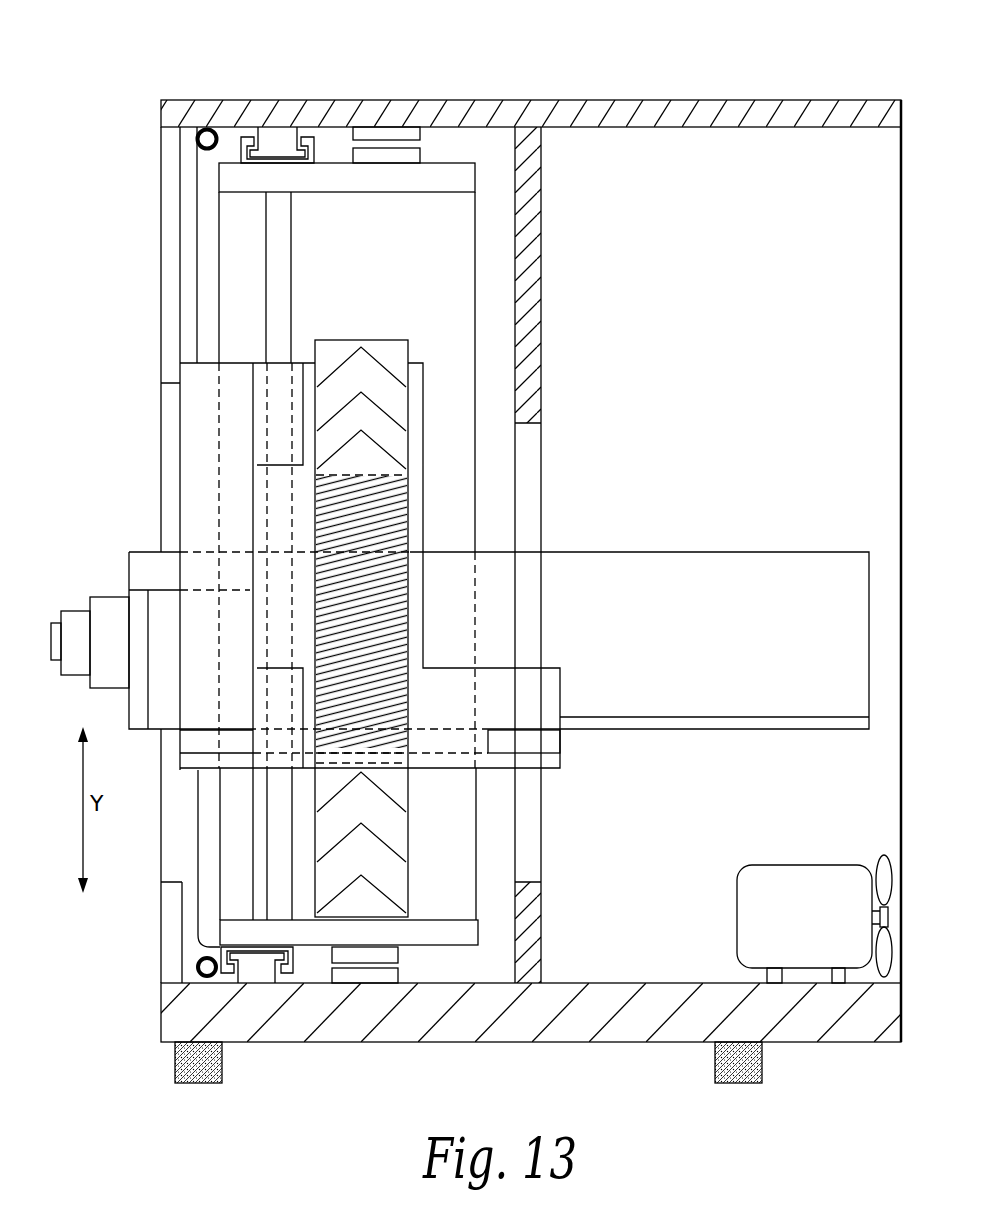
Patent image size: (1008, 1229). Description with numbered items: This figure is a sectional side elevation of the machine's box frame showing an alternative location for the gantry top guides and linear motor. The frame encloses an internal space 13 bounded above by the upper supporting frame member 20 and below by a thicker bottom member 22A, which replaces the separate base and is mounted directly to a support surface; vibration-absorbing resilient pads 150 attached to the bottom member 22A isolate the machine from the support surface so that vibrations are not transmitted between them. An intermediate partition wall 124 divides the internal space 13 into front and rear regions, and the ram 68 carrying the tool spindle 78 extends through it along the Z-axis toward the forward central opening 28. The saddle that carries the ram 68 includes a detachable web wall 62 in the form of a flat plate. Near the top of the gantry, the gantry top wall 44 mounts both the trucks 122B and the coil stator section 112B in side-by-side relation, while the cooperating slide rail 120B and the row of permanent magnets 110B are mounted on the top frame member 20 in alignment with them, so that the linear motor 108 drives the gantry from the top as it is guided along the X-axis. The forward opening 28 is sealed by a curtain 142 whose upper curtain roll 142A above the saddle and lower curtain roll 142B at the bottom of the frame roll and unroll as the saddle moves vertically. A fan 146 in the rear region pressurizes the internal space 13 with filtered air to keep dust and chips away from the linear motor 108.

The box frame internal space 13 is at (507, 426).
The upper supporting frame member 20 is at (340, 118).
The thicker bottom member 22A is at (451, 1025).
The forward central opening 28 is at (167, 388).
The gantry top wall 44 is at (465, 177).
The detachable web wall 62 is at (497, 762).
The ram 68 is at (644, 577).
The tool spindle 78 is at (63, 585).
The linear motor 108 is at (437, 434).
The row of permanent magnets 110B is at (390, 135).
The coil stator section 112B is at (408, 157).
The slide rail 120B is at (281, 138).
The trucks 122B is at (247, 138).
The intermediate partition wall 124 is at (530, 237).
The curtain 142 is at (197, 216).
The upper curtain roll 142A is at (197, 139).
The lower curtain roll 142B is at (198, 967).
The fan 146 is at (865, 840).
The vibration-absorbing resilient pads 150 is at (203, 1083).